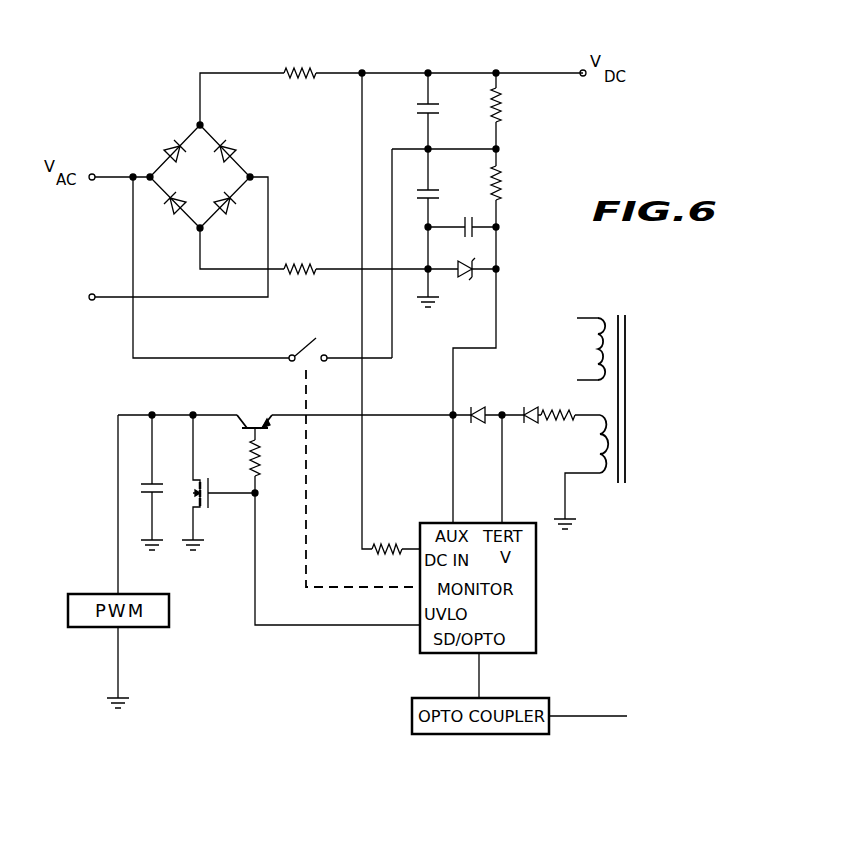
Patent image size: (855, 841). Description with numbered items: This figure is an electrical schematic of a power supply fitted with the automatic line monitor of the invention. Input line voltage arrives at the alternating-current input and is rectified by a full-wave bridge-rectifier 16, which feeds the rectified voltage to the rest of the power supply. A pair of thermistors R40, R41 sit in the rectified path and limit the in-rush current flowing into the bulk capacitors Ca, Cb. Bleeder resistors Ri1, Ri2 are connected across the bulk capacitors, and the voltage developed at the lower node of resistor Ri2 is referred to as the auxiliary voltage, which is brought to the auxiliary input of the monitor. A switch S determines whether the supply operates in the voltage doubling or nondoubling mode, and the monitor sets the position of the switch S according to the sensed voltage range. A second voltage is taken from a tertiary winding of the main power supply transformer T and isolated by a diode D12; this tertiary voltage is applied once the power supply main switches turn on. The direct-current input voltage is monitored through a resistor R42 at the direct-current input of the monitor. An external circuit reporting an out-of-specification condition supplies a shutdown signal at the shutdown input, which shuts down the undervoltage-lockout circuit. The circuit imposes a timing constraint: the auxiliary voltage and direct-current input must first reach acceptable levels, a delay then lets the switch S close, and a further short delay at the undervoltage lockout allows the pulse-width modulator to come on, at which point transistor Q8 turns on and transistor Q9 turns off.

The full-wave bridge-rectifier 16 is at (190, 127).
The thermistor R40 is at (302, 61).
The thermistor R41 is at (302, 257).
The resistor R42 is at (385, 539).
The bleeder resistor Ri1 is at (512, 105).
The bleeder resistor Ri2 is at (512, 185).
The bulk capacitor Ca is at (412, 113).
The bulk capacitor Cb is at (443, 199).
The transistor Q8 is at (254, 411).
The transistor Q9 is at (224, 477).
The diode D12 is at (487, 401).
The switch S is at (305, 344).
The main power supply transformer T is at (601, 386).